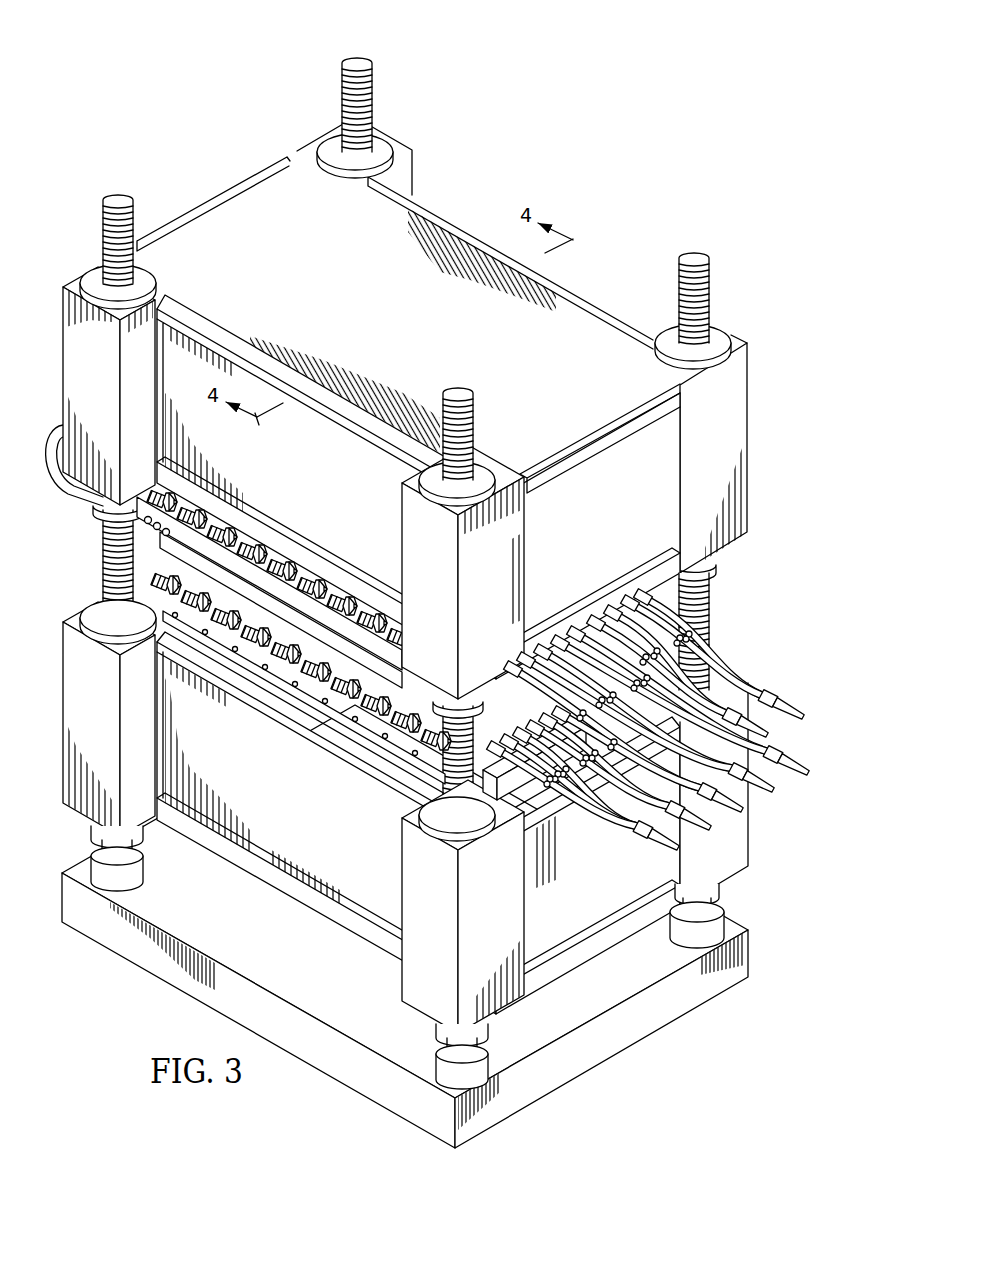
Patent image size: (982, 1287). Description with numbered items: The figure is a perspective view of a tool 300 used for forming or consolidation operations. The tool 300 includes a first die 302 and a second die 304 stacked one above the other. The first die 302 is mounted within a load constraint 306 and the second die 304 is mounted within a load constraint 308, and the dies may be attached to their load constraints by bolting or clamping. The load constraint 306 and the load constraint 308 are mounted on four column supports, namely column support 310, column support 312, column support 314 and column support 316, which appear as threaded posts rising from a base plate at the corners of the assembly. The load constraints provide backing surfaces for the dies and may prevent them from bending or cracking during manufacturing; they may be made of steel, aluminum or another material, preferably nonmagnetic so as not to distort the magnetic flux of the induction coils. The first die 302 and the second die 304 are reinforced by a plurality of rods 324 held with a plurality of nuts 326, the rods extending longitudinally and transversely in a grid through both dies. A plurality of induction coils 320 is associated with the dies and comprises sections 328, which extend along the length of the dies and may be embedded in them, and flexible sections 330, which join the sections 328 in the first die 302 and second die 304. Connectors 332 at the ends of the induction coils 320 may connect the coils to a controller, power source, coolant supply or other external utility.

The tool 300 is at (430, 581).
The first die 302 is at (222, 556).
The second die 304 is at (309, 660).
The load constraint 306 is at (746, 406).
The load constraint 308 is at (745, 826).
The column support 310 is at (118, 200).
The column support 312 is at (356, 64).
The column support 314 is at (452, 396).
The column support 316 is at (693, 258).
The plurality of induction coils 320 is at (722, 648).
The plurality of rods 324 is at (203, 624).
The plurality of nuts 326 is at (389, 718).
The sections 328 is at (501, 767).
The flexible sections 330 is at (752, 690).
The connectors 332 is at (652, 845).